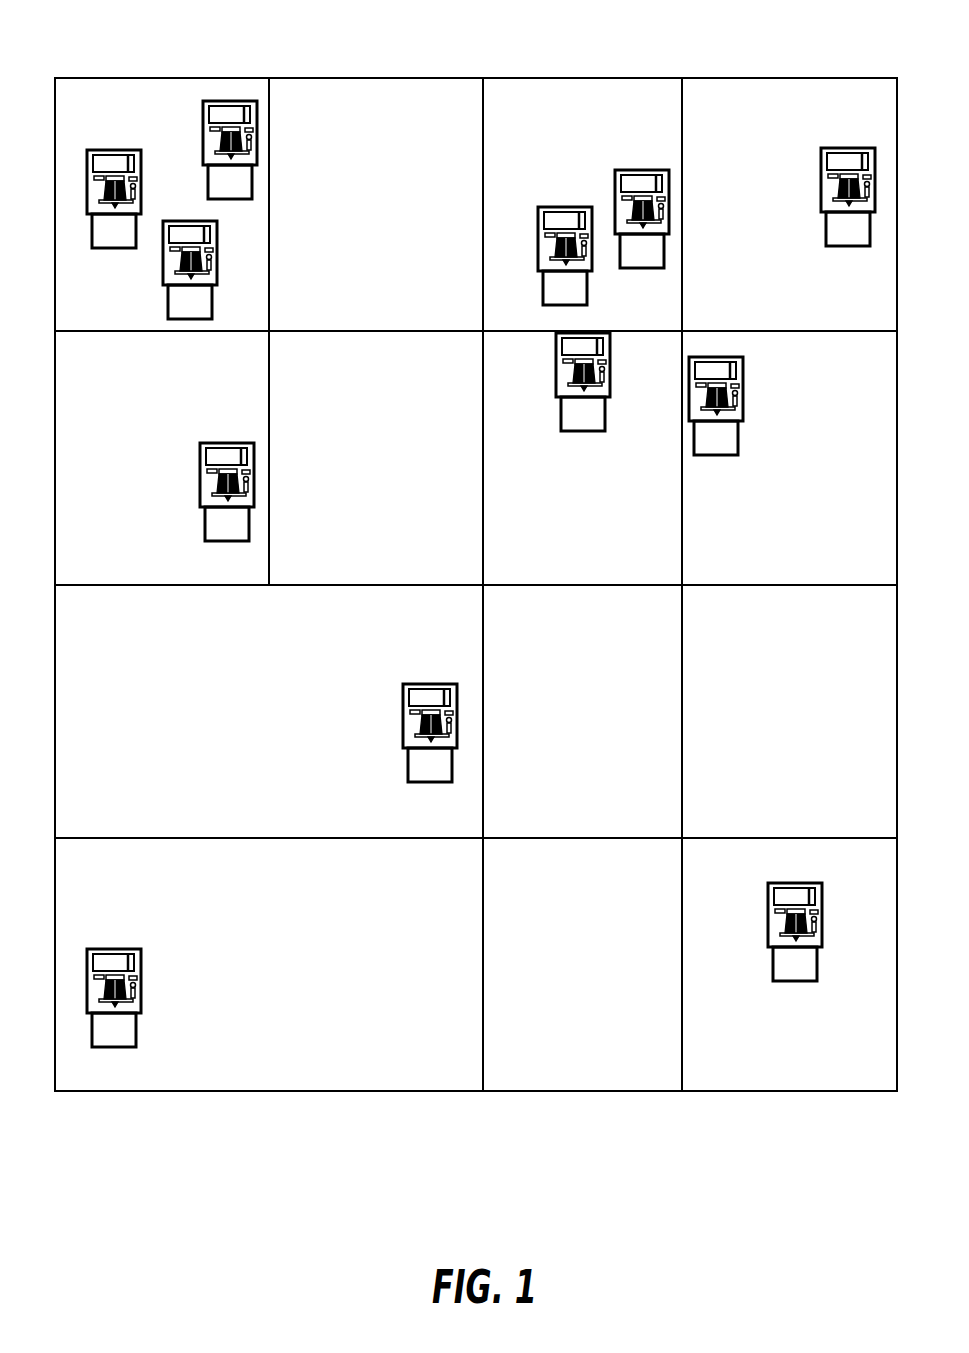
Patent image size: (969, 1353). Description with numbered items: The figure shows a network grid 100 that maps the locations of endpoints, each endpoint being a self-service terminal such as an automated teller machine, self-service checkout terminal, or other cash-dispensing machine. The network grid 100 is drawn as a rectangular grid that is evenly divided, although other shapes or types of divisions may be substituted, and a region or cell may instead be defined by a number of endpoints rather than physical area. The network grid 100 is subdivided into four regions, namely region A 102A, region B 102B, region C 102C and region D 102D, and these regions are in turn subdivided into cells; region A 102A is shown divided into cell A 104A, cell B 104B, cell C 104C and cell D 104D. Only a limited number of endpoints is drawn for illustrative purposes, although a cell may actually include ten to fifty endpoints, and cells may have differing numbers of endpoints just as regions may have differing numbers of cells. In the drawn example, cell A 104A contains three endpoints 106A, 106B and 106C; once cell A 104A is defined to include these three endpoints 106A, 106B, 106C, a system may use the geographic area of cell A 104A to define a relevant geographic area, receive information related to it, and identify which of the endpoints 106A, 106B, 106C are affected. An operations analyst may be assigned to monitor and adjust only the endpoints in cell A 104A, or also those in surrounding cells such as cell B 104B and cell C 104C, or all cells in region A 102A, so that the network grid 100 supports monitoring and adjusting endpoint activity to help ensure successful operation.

The network grid 100 is at (813, 19).
The region A 102A is at (392, 550).
The region B 102B is at (806, 550).
The region C 102C is at (392, 1061).
The region D 102D is at (806, 1061).
The cell A 104A is at (137, 78).
The cell B 104B is at (333, 77).
The cell C 104C is at (128, 368).
The cell D 104D is at (338, 368).
The endpoint 106A is at (97, 150).
The endpoint 106B is at (228, 101).
The endpoint 106C is at (218, 250).